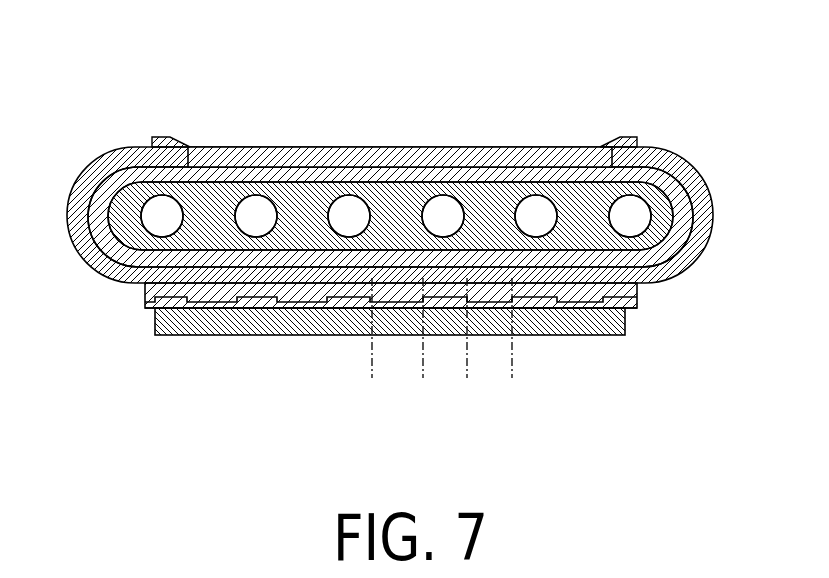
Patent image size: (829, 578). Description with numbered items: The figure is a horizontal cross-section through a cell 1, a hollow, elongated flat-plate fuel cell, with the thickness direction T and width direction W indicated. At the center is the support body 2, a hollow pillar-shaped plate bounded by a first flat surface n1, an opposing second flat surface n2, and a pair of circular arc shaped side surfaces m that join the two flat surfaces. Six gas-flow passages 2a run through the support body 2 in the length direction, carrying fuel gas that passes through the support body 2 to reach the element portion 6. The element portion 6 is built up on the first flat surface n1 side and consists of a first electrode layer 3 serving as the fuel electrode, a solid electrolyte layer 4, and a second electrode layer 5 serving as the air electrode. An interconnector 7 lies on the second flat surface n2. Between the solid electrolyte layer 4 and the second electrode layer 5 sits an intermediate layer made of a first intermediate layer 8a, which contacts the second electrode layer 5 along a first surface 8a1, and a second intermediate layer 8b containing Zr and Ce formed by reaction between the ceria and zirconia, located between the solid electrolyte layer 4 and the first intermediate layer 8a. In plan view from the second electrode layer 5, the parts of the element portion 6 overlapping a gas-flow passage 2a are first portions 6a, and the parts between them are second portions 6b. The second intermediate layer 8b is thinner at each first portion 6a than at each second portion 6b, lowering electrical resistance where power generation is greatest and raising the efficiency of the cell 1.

The cell 1 is at (687, 108).
The support body 2 is at (298, 232).
The gas-flow passage 2a is at (345, 205).
The first electrode layer 3 is at (673, 254).
The solid electrolyte layer 4 is at (678, 279).
The second electrode layer 5 is at (625, 328).
The element portion 6 is at (475, 333).
The first portion 6a is at (423, 376).
The second portion 6b is at (490, 388).
The interconnector 7 is at (406, 160).
The first intermediate layer 8a is at (637, 305).
The first surface 8a1 is at (527, 312).
The second intermediate layer 8b is at (637, 292).
The side surface m is at (92, 216).
The first flat surface n1 is at (352, 258).
The second flat surface n2 is at (478, 180).
The thickness direction T is at (62, 28).
The width direction W is at (168, 431).